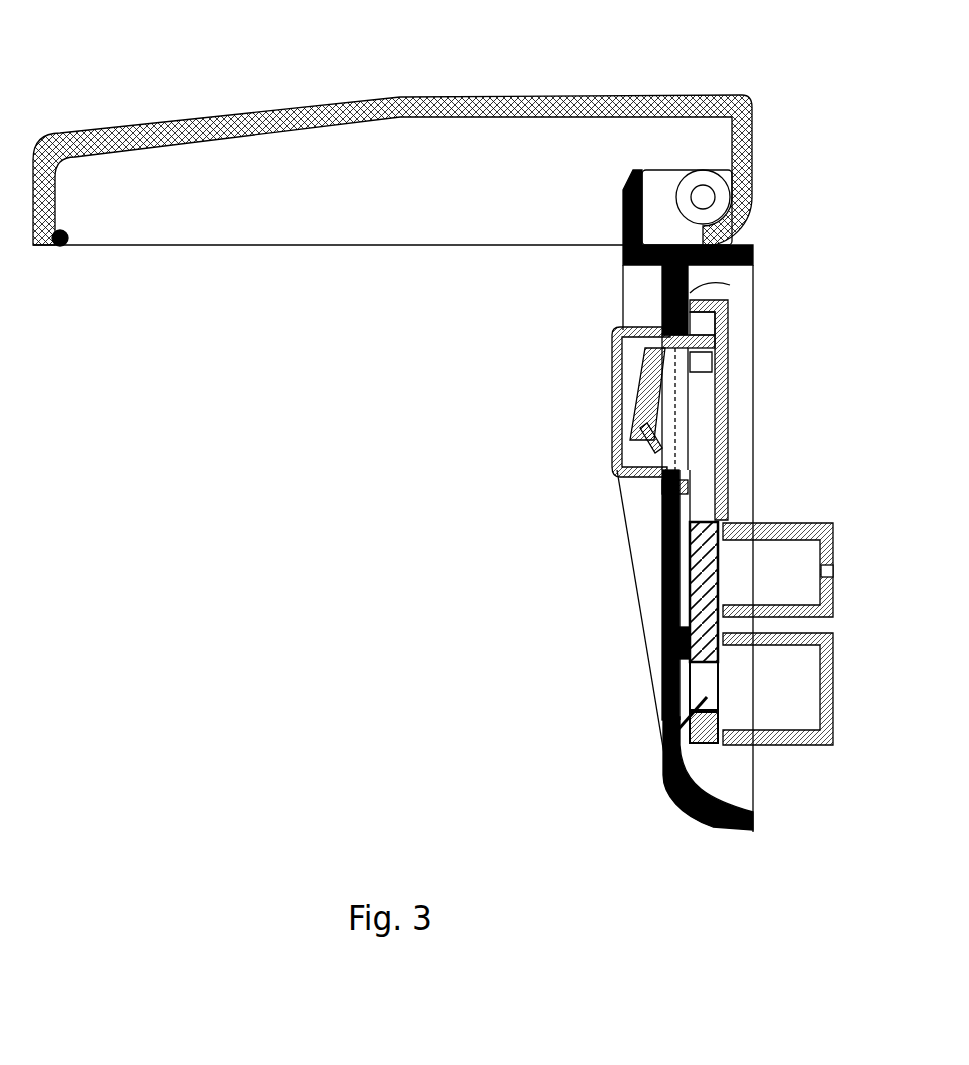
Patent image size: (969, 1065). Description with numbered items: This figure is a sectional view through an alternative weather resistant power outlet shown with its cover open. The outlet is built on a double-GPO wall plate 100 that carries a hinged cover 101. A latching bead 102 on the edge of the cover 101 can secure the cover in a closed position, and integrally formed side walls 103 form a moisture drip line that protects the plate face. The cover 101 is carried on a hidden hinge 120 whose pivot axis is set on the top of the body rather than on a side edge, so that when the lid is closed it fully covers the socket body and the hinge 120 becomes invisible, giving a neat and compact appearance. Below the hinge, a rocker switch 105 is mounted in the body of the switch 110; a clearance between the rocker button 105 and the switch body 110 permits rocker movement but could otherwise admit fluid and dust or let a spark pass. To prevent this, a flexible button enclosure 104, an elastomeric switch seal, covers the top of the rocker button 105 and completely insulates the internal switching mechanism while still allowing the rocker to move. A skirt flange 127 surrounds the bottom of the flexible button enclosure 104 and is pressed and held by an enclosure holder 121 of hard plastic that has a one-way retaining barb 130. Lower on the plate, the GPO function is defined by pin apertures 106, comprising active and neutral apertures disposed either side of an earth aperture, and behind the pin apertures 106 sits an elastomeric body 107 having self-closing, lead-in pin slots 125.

The double-GPO wall plate 100 is at (753, 256).
The hinged cover 101 is at (478, 96).
The latching bead 102 is at (62, 247).
The side walls 103 is at (347, 222).
The flexible button enclosure 104 is at (613, 397).
The rocker switch 105 is at (637, 432).
The pin apertures 106 is at (663, 690).
The elastomeric body 107 is at (693, 622).
The body of the switch 110 is at (717, 382).
The hidden hinge 120 is at (703, 197).
The enclosure holder 121 is at (657, 297).
The lead-in pin slots 125 is at (667, 742).
The skirt flange 127 is at (657, 313).
The one-way retaining barb 130 is at (690, 293).